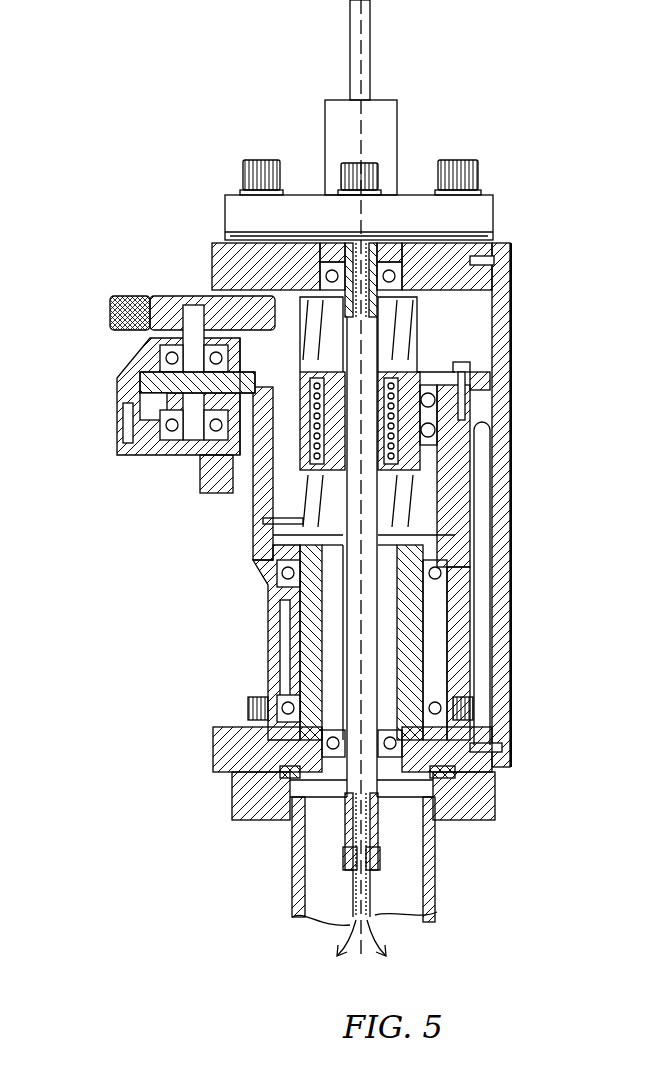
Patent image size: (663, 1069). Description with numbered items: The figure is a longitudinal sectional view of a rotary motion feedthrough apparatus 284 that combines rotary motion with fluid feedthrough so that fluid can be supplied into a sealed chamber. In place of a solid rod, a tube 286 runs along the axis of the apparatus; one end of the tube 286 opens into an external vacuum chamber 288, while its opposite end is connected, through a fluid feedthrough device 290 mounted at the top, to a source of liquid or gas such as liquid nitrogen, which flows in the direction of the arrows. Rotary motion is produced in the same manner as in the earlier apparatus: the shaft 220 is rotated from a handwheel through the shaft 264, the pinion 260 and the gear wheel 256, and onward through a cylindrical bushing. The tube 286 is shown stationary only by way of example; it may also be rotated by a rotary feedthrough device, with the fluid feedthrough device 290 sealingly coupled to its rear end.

The fluid feedthrough device 290 is at (305, 130).
The shaft 220 is at (302, 237).
The gear wheel 256 is at (495, 372).
The shaft 264 is at (150, 343).
The pinion 260 is at (118, 396).
The rotary motion feedthrough apparatus 284 is at (535, 628).
The external vacuum chamber 288 is at (270, 861).
The tube 286 is at (353, 895).